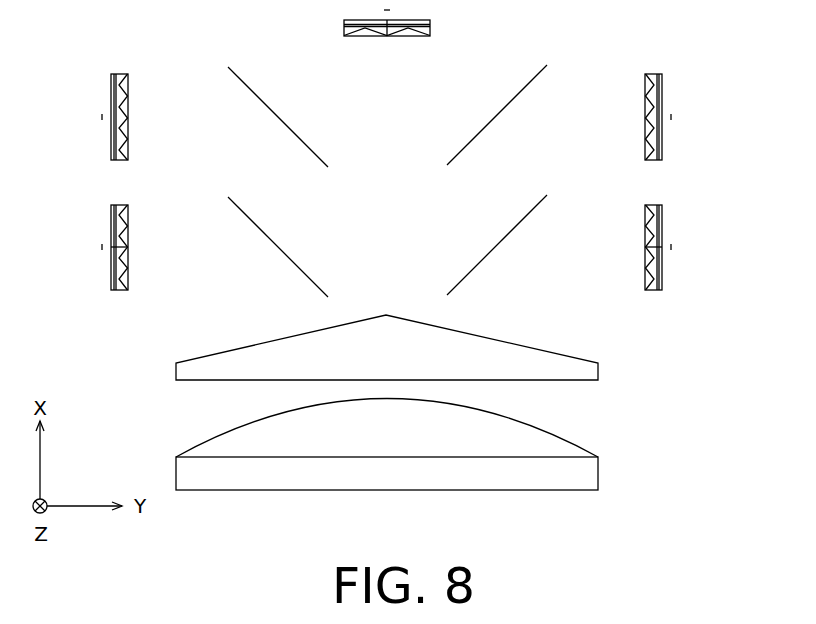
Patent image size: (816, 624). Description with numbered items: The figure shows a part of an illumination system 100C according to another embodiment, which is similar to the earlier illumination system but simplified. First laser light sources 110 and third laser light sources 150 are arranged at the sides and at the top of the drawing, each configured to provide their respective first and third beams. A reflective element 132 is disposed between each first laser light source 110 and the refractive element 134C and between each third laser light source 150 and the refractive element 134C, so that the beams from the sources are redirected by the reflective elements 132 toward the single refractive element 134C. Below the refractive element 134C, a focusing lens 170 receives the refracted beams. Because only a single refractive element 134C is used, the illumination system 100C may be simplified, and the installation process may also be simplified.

The illumination system 100C is at (712, 521).
The first laser light source 110 is at (110, 221).
The reflective element 132 is at (314, 156).
The refractive element 134C is at (596, 368).
The third laser light source 150 is at (431, 24).
The focusing lens 170 is at (596, 466).